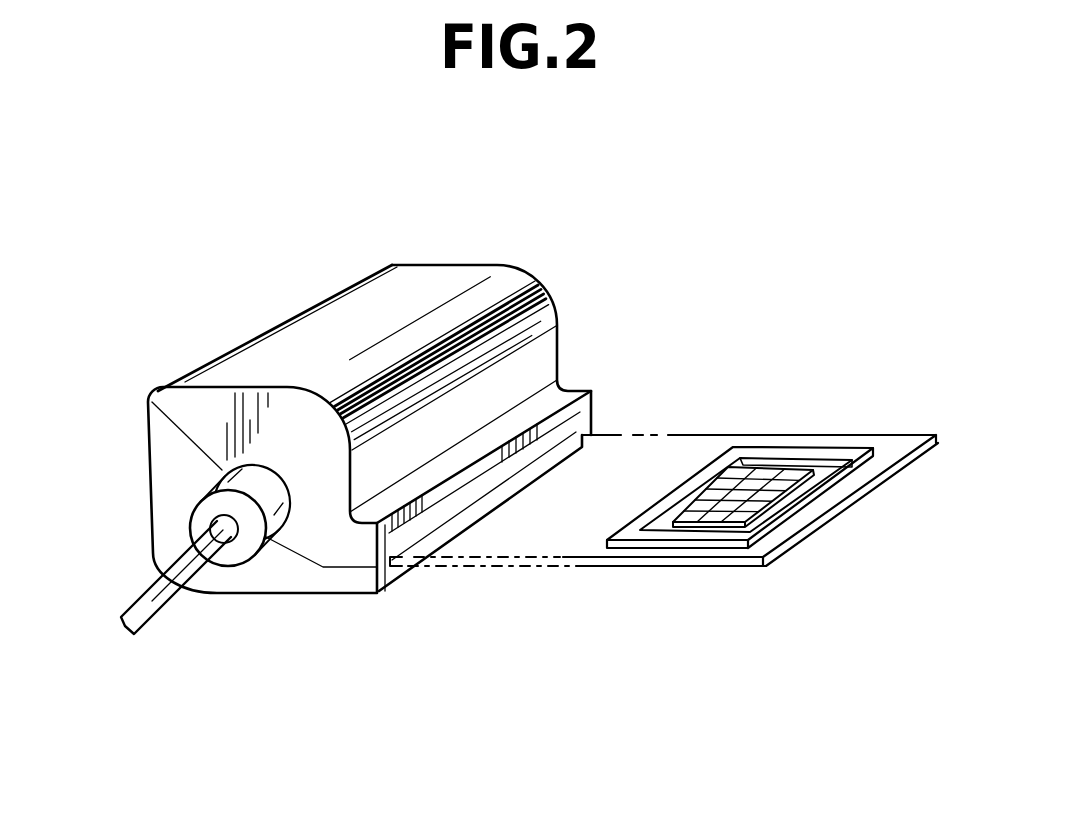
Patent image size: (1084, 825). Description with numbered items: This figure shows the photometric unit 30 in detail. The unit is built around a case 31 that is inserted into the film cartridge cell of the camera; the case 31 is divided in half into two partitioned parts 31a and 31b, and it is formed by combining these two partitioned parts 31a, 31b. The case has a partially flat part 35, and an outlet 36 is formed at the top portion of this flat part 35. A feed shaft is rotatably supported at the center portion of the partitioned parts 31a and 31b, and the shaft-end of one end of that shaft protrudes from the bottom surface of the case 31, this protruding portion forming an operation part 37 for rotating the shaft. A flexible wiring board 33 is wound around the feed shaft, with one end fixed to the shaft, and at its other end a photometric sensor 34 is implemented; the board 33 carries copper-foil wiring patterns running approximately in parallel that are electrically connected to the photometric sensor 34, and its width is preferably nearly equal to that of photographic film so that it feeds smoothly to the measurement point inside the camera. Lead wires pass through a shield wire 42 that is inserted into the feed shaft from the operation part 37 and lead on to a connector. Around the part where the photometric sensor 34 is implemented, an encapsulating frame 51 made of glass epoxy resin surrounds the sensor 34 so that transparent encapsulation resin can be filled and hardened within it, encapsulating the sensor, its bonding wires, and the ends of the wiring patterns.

The photometric unit 30 is at (346, 426).
The case 31 is at (333, 396).
The partitioned part 31a is at (163, 467).
The partitioned part 31b is at (218, 374).
The flexible wiring board 33 is at (698, 434).
The photometric sensor 34 is at (722, 503).
The flat part 35 is at (340, 578).
The outlet 36 is at (448, 522).
The operation part 37 is at (267, 510).
The shield wire 42 is at (168, 596).
The encapsulating frame 51 is at (858, 447).